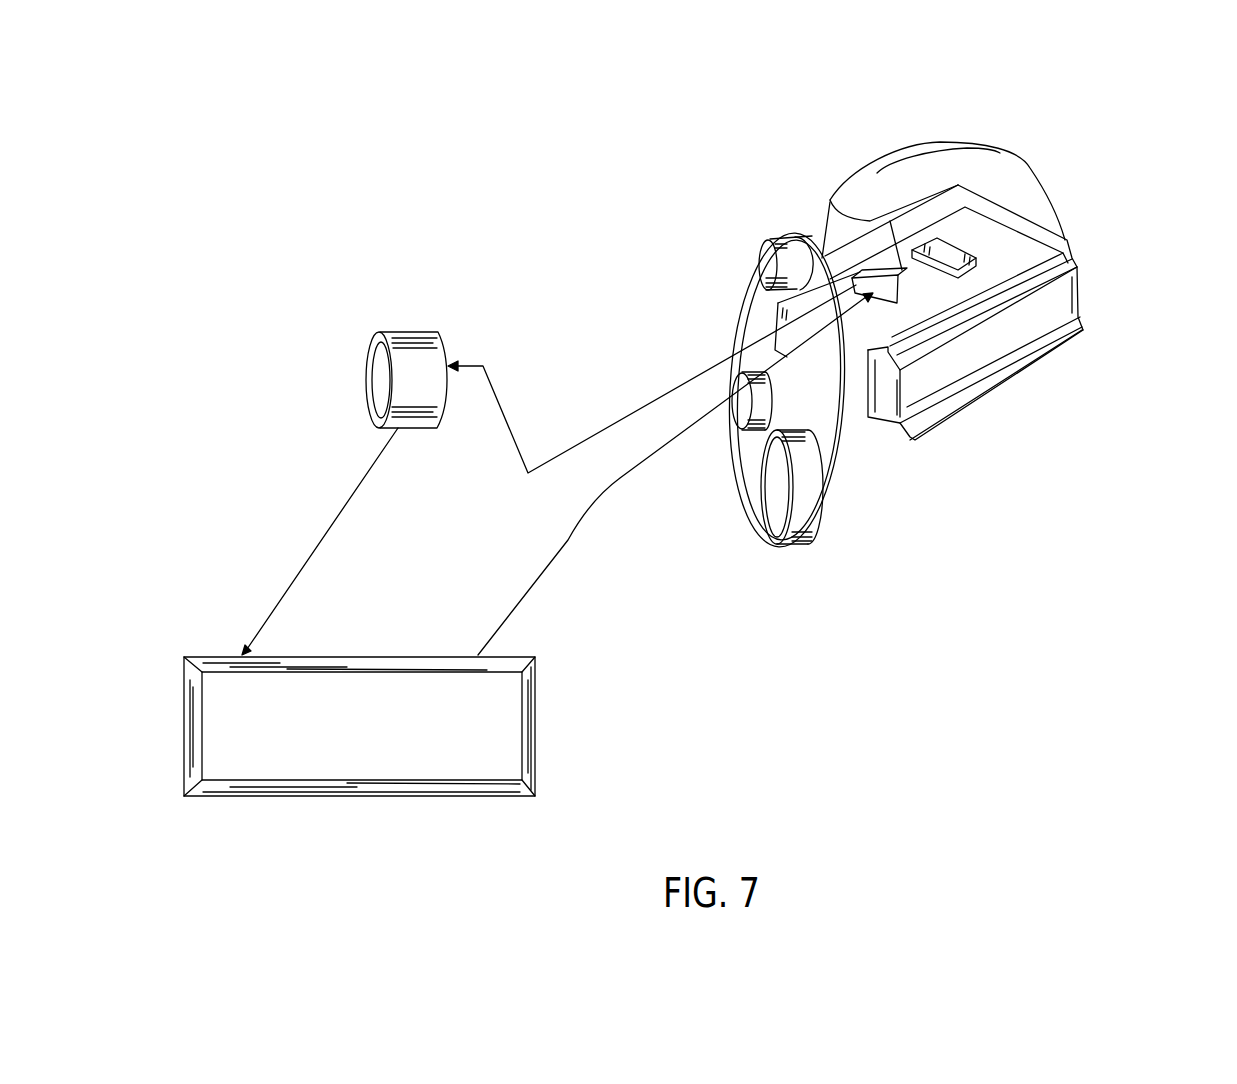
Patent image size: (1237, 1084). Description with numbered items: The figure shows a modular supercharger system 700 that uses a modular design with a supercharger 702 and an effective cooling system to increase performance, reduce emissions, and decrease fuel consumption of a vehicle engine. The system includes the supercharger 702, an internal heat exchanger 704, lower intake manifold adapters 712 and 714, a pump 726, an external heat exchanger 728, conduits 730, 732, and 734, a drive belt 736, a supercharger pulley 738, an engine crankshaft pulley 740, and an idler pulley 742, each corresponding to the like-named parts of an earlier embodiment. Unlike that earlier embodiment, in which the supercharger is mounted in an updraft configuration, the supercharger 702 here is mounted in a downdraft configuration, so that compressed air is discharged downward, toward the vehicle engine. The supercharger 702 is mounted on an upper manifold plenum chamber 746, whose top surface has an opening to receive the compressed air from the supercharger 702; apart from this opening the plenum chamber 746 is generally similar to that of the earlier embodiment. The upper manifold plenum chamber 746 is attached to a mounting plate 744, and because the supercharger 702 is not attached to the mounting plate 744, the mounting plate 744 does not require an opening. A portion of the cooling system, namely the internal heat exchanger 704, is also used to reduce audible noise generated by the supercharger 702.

The modular supercharger system 700 is at (1170, 148).
The supercharger 702 is at (867, 190).
The internal heat exchanger 704 is at (953, 283).
The lower intake manifold adapter 712 is at (887, 413).
The lower intake manifold adapter 714 is at (778, 320).
The pump 726 is at (365, 337).
The external heat exchanger 728 is at (437, 800).
The conduit 730 is at (583, 442).
The conduit 732 is at (310, 538).
The conduit 734 is at (545, 542).
The drive belt 736 is at (738, 482).
The supercharger pulley 738 is at (762, 258).
The engine crankshaft pulley 740 is at (777, 527).
The idler pulley 742 is at (736, 392).
The mounting plate 744 is at (1070, 244).
The upper manifold plenum chamber 746 is at (1053, 220).